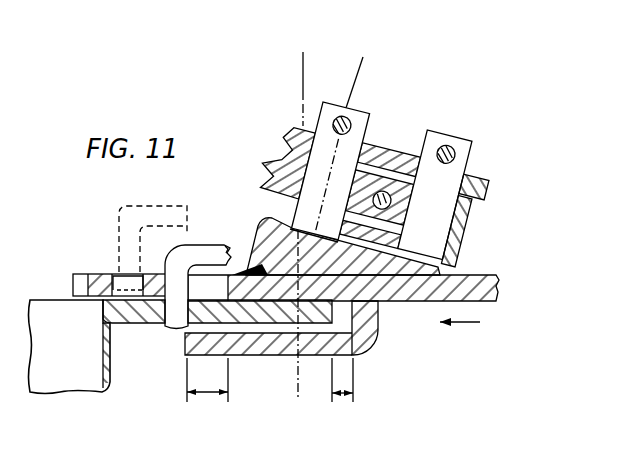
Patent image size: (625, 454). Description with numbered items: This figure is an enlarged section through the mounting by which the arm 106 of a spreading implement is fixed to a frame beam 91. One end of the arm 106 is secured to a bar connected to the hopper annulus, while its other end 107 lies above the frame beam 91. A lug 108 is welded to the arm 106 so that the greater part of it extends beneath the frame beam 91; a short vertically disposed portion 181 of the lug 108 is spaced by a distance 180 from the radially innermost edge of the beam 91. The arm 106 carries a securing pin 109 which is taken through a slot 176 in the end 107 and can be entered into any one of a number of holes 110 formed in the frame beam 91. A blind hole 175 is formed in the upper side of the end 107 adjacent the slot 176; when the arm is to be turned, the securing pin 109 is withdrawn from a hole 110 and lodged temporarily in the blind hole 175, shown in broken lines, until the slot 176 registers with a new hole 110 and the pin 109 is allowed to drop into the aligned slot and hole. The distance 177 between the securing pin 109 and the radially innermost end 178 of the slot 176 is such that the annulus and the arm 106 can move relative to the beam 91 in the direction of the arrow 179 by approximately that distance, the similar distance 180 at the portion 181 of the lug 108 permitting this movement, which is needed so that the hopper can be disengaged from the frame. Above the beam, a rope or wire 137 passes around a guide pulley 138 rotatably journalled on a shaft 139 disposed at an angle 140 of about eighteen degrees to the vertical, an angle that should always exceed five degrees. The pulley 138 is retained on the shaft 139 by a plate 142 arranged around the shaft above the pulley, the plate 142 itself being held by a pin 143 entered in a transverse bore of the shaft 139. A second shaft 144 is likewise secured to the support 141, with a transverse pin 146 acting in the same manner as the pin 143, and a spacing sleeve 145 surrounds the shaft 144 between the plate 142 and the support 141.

The frame beam 91 is at (85, 389).
The arm 106 is at (500, 302).
The end of the arm 107 is at (75, 282).
The lug 108 is at (352, 352).
The securing pin 109 is at (118, 218).
The holes 110 is at (161, 322).
The rope or wire 137 is at (397, 158).
The guide pulley 138 is at (281, 155).
The shaft 139 is at (372, 125).
The angle 140 is at (360, 66).
The support 141 is at (266, 228).
The plate 142 is at (490, 186).
The pin 143 is at (344, 112).
The shaft 144 is at (468, 160).
The spacing sleeve 145 is at (464, 224).
The transverse pin 146 is at (448, 143).
The blind hole 175 is at (118, 274).
The slot 176 is at (165, 262).
The distance 177 is at (212, 396).
The radially innermost end of the slot 178 is at (230, 252).
The arrow 179 is at (463, 325).
The distance 180 is at (343, 398).
The short vertically disposed portion 181 is at (376, 318).